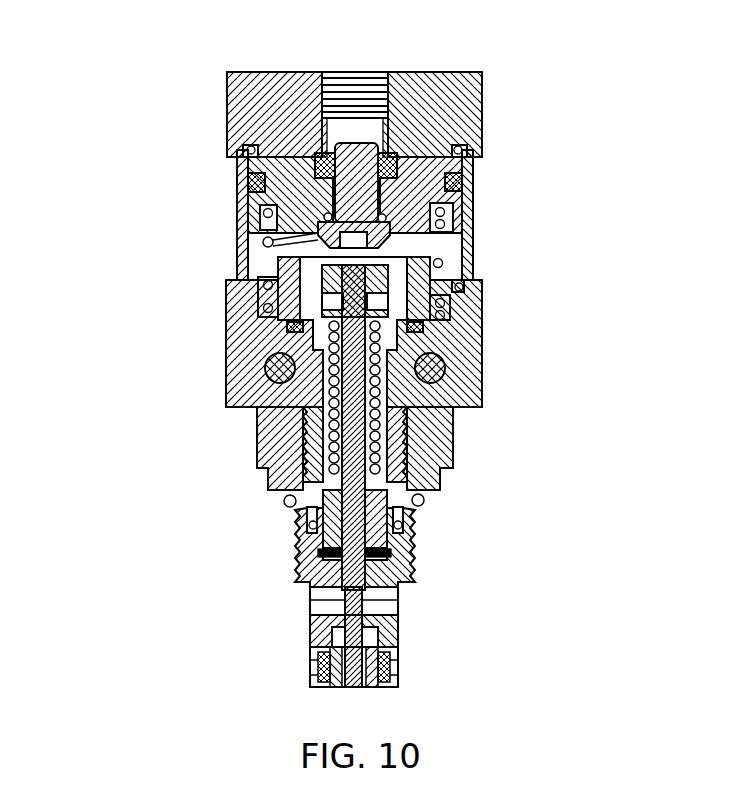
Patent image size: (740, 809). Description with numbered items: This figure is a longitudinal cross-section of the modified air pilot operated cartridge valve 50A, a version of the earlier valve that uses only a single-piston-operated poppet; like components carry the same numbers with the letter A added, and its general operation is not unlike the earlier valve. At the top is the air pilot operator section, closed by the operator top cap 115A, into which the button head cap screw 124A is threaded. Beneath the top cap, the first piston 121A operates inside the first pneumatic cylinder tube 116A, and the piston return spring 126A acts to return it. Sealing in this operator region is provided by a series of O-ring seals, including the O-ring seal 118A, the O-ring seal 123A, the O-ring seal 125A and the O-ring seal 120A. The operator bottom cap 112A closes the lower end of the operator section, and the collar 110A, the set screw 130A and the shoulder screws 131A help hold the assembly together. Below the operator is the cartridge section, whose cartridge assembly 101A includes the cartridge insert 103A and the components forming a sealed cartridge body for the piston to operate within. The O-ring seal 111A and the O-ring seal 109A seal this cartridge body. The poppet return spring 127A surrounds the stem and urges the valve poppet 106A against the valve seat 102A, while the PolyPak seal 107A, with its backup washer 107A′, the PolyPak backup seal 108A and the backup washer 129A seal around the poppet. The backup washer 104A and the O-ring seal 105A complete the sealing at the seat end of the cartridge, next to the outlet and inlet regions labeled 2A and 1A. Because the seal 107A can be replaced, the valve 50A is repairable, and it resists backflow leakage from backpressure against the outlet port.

The modified valve 50A is at (133, 43).
The operator top cap 115A is at (470, 103).
The button head cap screw 124A is at (357, 142).
The O-ring seal 118A is at (466, 148).
The O-ring seal 123A is at (282, 192).
The O-ring seal 125A is at (387, 217).
The piston #1 121A is at (243, 205).
The pneumatic cylinder tube #1 116A is at (470, 211).
The piston return spring 126A is at (266, 242).
The collar 110A is at (445, 262).
The O-ring seal 120A is at (463, 288).
The set screw 130A is at (286, 329).
The shoulder screws 131A is at (266, 371).
The O-ring seal 111A is at (440, 325).
The cartridge insert 103A is at (470, 344).
The operator bottom cap 112A is at (472, 375).
The poppet return spring 127A is at (300, 430).
The cartridge assembly 101A is at (447, 435).
The O-ring seal 109A is at (284, 502).
The PolyPak backup seal 108A is at (303, 518).
The PolyPak seal 107A is at (307, 558).
The backup washer 107A′ is at (413, 567).
The backup washer 129A is at (422, 506).
The valve poppet 106A is at (397, 598).
The passage 2A is at (320, 600).
The valve seat 102A is at (397, 627).
The backup washer 104A is at (317, 653).
The O-ring seal 105A is at (398, 662).
The outlet 1A is at (332, 688).